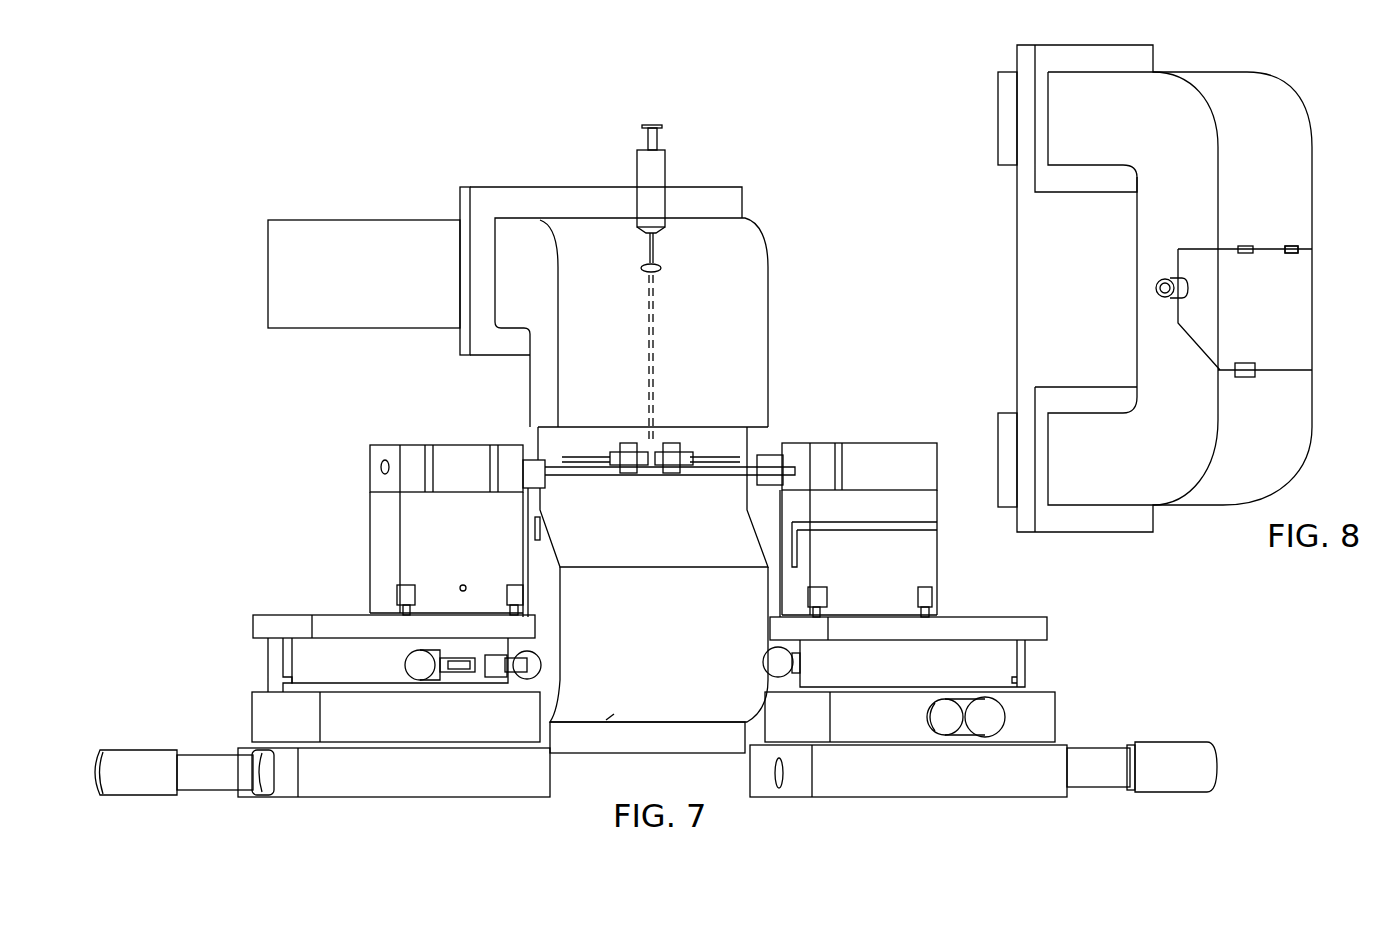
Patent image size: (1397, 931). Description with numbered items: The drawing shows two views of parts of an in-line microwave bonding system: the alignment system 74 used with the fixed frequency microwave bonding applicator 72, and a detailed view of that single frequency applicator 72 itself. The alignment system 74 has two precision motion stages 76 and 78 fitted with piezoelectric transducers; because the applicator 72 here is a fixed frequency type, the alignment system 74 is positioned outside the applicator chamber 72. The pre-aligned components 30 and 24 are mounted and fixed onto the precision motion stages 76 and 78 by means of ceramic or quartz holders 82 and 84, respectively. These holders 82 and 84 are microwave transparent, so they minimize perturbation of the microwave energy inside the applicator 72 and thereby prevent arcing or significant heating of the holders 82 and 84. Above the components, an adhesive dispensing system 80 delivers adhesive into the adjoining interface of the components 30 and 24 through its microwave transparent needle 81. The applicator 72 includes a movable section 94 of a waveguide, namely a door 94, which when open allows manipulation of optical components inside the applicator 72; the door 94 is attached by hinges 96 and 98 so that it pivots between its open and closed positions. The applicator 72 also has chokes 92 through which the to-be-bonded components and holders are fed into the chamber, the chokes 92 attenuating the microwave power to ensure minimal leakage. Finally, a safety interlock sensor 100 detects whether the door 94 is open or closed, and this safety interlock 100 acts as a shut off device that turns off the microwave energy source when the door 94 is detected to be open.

In FIG. 7, the single frequency microwave applicator 72 is at (380, 220).
In FIG. 8, the single frequency microwave applicator 72 is at (1337, 163).
In FIG. 7, the alignment system 74 is at (858, 295).
In FIG. 7, the precision motion stage 76 is at (373, 812).
In FIG. 7, the precision motion stage 78 is at (933, 808).
In FIG. 7, the adhesive dispensing system 80 is at (665, 170).
In FIG. 7, the microwave transparent needle 81 is at (655, 318).
In FIG. 7, the ceramic or quartz holder 82 is at (578, 476).
In FIG. 7, the ceramic or quartz holder 84 is at (703, 478).
In FIG. 7, the pre-aligned component 30 is at (627, 445).
In FIG. 7, the pre-aligned component 24 is at (673, 445).
In FIG. 8, the choke 92 is at (1156, 288).
In FIG. 8, the movable section (door) of waveguide 94 is at (1275, 248).
In FIG. 8, the hinge 96 is at (1240, 246).
In FIG. 8, the hinge 98 is at (1295, 254).
In FIG. 8, the safety interlock sensor 100 is at (1258, 377).